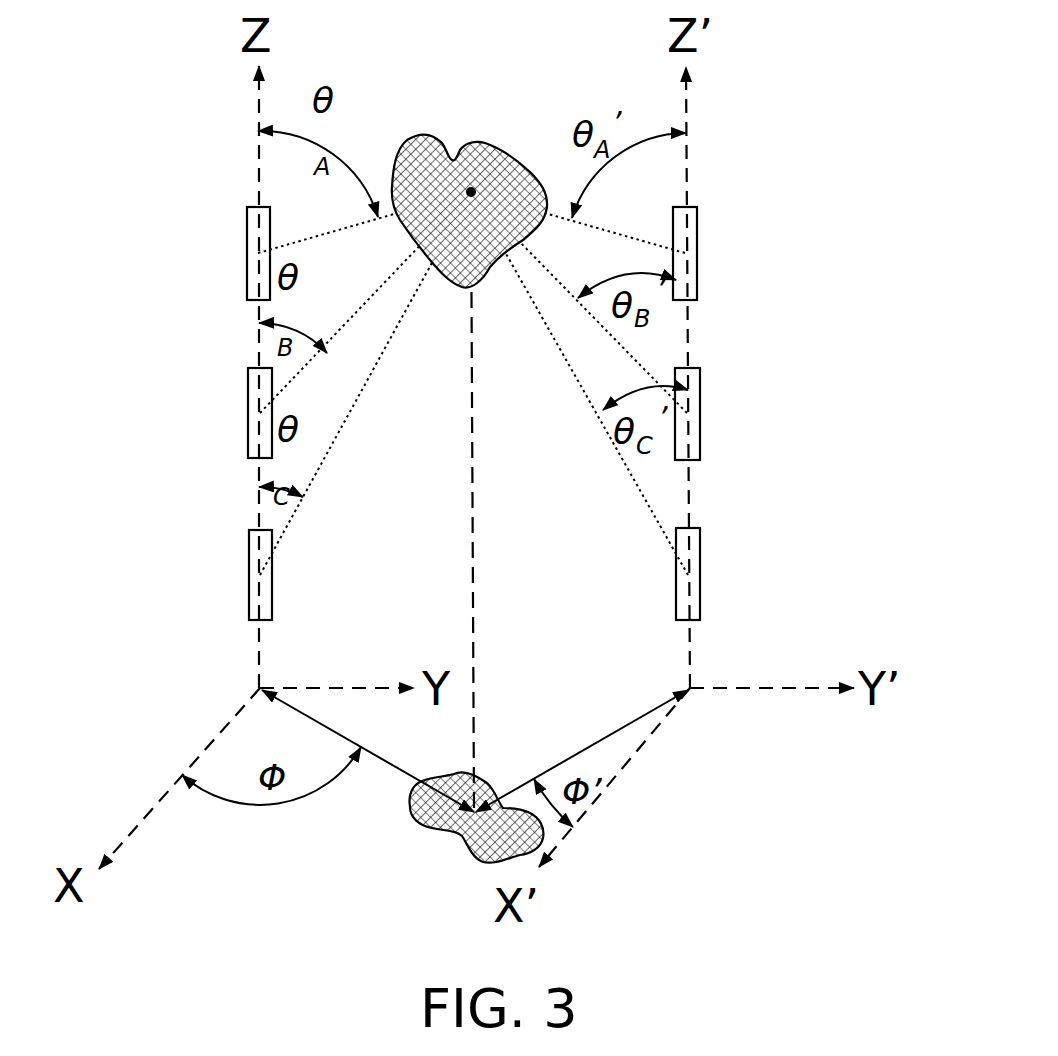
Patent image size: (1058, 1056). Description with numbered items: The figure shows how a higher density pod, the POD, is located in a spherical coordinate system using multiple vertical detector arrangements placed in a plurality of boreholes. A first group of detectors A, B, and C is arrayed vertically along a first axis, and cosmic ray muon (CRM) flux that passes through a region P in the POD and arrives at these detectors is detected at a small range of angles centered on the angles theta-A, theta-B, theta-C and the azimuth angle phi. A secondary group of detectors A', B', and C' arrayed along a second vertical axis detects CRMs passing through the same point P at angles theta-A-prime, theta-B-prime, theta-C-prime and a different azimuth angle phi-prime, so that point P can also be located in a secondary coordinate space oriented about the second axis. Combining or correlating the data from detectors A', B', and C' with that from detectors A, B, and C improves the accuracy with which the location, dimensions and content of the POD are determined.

The detector A is at (181, 241).
The detector B is at (182, 397).
The detector C is at (182, 564).
The secondary detector A' is at (761, 239).
The secondary detector B' is at (763, 400).
The secondary detector C' is at (763, 561).
The higher density pod POD is at (418, 150).
The region in the POD P is at (474, 190).